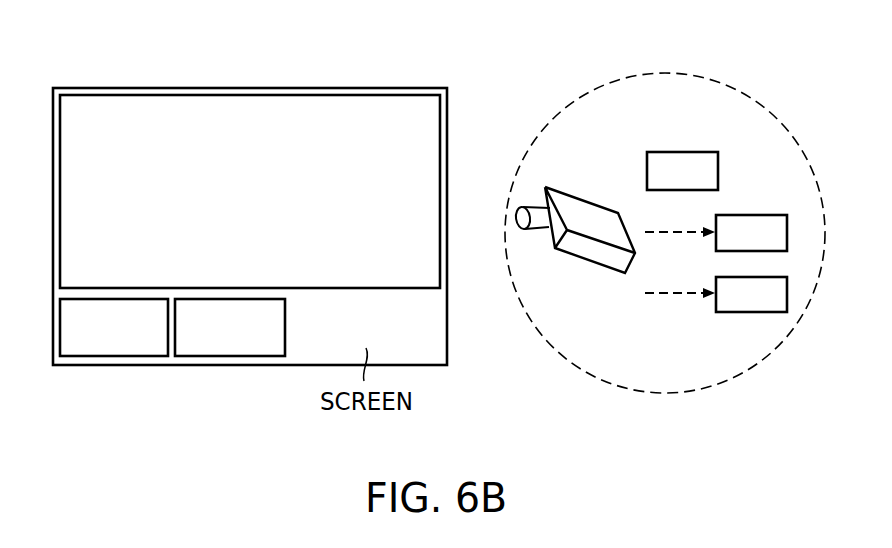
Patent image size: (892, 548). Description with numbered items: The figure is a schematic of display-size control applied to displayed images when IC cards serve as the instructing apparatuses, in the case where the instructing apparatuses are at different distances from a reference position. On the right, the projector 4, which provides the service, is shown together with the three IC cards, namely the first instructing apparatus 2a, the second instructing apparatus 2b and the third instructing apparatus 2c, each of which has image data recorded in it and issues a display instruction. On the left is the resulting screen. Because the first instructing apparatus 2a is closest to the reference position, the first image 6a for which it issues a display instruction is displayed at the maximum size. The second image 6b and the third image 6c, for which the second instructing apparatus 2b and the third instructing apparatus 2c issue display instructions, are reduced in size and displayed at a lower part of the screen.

The first image 6a is at (98, 110).
The second image 6b is at (105, 347).
The third image 6c is at (223, 345).
The projector 4 is at (588, 218).
The first instructing apparatus 2a is at (718, 168).
The second instructing apparatus 2b is at (780, 229).
The third instructing apparatus 2c is at (776, 292).